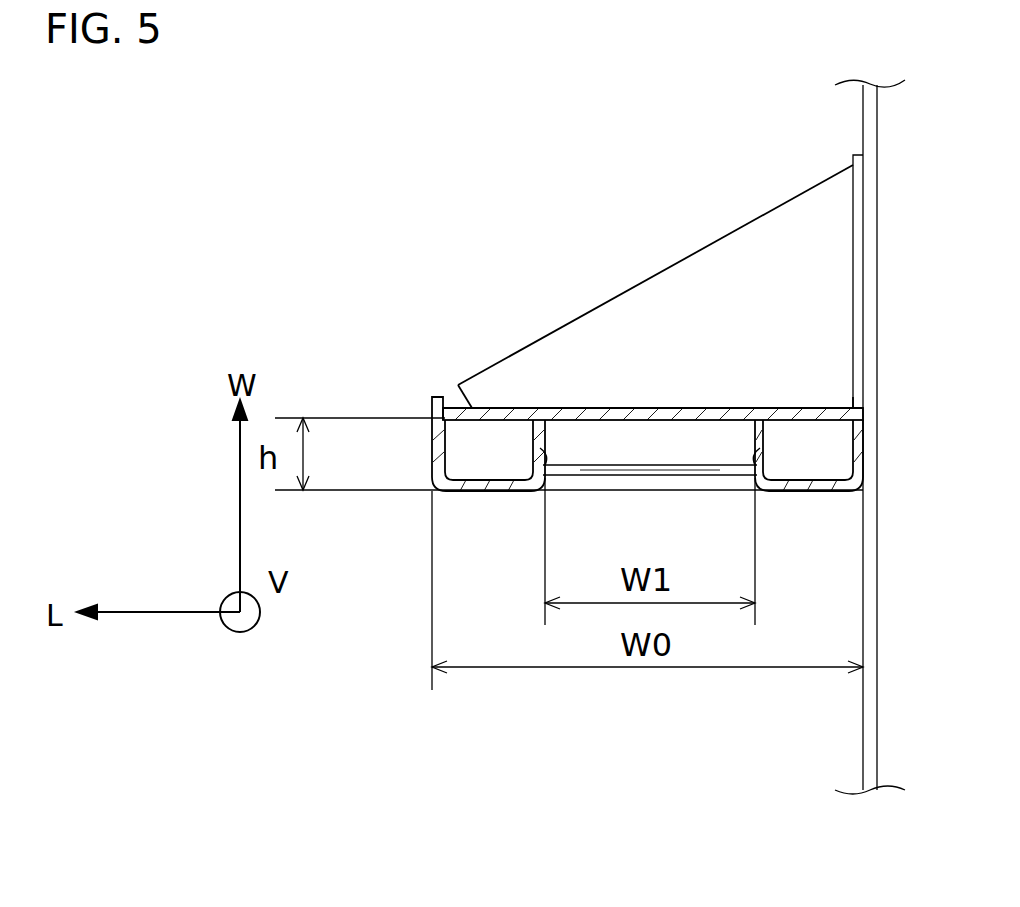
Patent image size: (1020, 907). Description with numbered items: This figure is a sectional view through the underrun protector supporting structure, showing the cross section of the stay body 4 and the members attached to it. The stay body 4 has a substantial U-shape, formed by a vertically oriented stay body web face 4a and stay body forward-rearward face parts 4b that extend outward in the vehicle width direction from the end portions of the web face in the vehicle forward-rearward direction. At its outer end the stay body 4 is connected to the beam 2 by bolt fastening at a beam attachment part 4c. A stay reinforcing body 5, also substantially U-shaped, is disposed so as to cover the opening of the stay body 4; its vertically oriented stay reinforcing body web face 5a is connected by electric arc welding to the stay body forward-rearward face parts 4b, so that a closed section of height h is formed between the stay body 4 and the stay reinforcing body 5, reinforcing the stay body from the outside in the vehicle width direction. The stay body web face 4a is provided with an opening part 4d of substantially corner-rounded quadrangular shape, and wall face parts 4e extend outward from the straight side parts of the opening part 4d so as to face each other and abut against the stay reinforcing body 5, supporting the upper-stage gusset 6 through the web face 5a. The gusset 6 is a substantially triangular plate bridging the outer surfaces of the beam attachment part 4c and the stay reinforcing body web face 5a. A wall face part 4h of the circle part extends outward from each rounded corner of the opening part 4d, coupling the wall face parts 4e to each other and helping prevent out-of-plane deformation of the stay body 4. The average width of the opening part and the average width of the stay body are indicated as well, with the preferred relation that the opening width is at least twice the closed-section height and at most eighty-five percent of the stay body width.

The beam 2 is at (878, 592).
The stay body 4 is at (648, 490).
The stay body web face 4a is at (488, 492).
The stay body forward-rearward face part 4b is at (434, 450).
The beam attachment part 4c is at (853, 245).
The opening part 4d is at (668, 460).
The wall face part 4e is at (546, 450).
The wall face part of circle part 4h is at (598, 466).
The stay reinforcing body 5 is at (592, 395).
The stay reinforcing body web face 5a is at (678, 408).
The gusset 6 is at (648, 278).